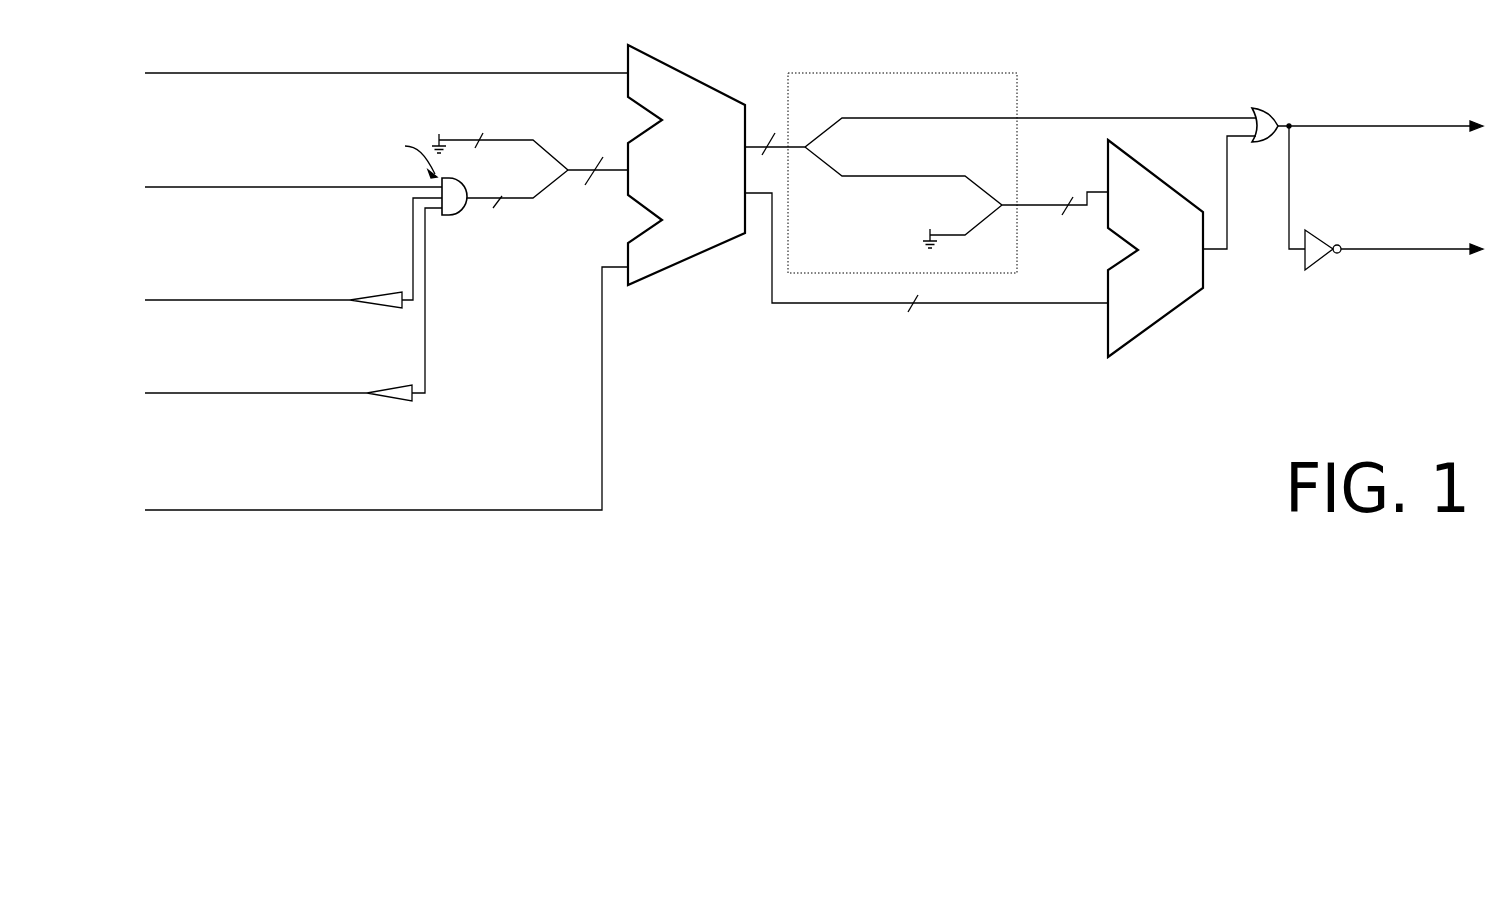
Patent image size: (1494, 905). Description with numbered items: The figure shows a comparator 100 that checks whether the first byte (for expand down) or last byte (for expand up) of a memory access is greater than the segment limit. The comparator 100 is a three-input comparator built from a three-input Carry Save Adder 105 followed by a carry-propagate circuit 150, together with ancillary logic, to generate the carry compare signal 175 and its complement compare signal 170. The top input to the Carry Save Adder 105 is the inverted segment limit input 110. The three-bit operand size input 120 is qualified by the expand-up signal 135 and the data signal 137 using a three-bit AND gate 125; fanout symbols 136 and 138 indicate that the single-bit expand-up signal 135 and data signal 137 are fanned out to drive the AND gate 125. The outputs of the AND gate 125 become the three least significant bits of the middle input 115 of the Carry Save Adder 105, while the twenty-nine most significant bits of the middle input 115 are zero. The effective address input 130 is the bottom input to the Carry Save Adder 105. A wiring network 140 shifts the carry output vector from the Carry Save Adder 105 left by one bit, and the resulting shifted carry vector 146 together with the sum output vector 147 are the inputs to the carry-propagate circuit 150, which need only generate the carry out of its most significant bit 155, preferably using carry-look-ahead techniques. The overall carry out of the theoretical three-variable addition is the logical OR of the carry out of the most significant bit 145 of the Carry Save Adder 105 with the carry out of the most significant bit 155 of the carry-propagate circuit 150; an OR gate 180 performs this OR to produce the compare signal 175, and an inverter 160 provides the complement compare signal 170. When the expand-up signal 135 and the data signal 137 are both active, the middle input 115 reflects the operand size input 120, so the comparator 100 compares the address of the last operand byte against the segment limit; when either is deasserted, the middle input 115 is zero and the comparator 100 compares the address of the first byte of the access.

The comparator 100 is at (737, 508).
The carry save adder 105 is at (673, 265).
The SEGLIMIT_1 31..0 * input 110 is at (237, 73).
The middle input 115 is at (612, 173).
The OSZM1_1 2..0 input 120 is at (303, 187).
The 3-bit AND gate 125 is at (462, 210).
The EFFADDR_1 31..0 input 130 is at (265, 510).
The EXPAND_UP_1 signal 135 is at (287, 393).
The fanout symbol 136 is at (403, 402).
The DATA_1 signal 137 is at (202, 300).
The fanout symbol 138 is at (388, 308).
The wiring network 140 is at (845, 73).
The carry out of the most significant bit of the CSA 145 is at (1095, 118).
The shifted carry vector 146 is at (1030, 207).
The sum output vector 147 is at (998, 303).
The carry-propagate circuit 150 is at (1190, 298).
The carry out of the most significant bit of the carry-propagate circuit 155 is at (1227, 250).
The inverter 160 is at (1325, 253).
The COMPARE_1* signal 170 is at (1400, 249).
The COMPARE_1 signal 175 is at (1317, 127).
The OR gate 180 is at (1256, 110).